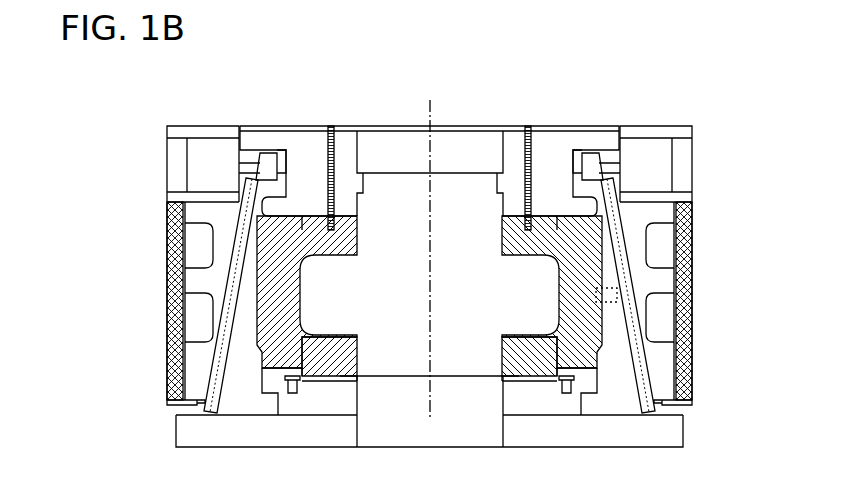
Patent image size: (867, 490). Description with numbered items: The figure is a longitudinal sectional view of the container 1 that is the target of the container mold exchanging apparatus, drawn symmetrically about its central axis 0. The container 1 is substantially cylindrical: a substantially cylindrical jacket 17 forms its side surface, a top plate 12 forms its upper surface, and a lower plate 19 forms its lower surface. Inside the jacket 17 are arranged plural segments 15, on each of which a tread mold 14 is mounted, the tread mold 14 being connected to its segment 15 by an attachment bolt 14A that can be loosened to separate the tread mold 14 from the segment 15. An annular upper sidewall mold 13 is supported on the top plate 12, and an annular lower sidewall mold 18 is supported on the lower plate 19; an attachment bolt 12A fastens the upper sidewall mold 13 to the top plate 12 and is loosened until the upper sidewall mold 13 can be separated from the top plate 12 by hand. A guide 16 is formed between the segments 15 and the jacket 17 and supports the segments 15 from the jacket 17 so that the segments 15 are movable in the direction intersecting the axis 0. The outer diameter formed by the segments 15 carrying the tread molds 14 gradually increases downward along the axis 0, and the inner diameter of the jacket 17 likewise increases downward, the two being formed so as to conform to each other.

The axis 0 is at (428, 114).
The container 1 is at (684, 97).
The top plate 12 is at (583, 132).
The attachment bolt 12A is at (527, 127).
The upper sidewall mold 13 is at (513, 233).
The tread mold 14 is at (600, 328).
The attachment bolt 14A is at (617, 294).
The segment 15 is at (625, 358).
The guide 16 is at (658, 380).
The jacket 17 is at (668, 402).
The lower sidewall mold 18 is at (507, 355).
The lower plate 19 is at (185, 432).